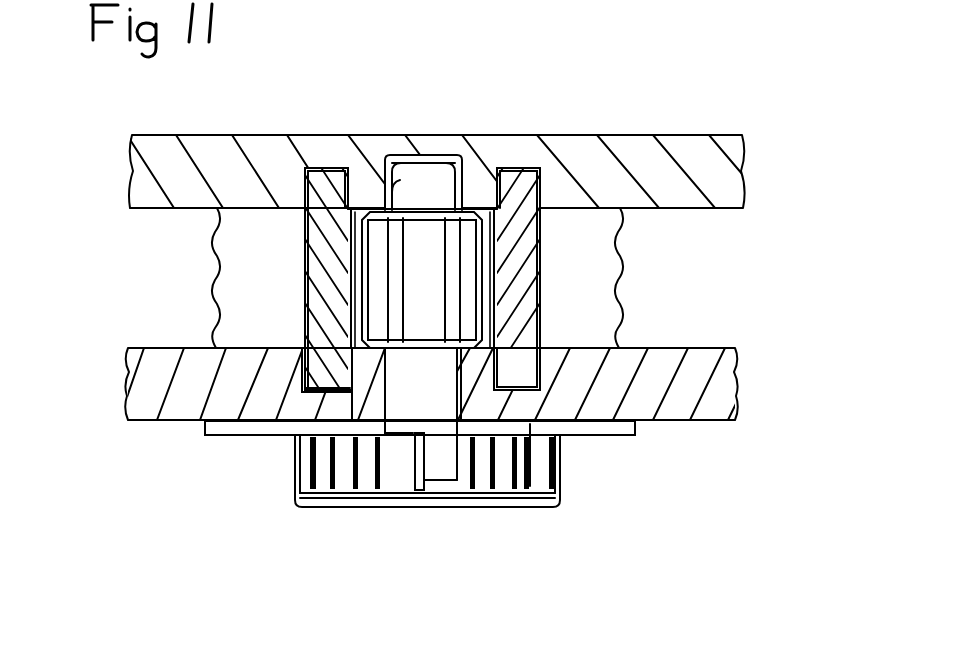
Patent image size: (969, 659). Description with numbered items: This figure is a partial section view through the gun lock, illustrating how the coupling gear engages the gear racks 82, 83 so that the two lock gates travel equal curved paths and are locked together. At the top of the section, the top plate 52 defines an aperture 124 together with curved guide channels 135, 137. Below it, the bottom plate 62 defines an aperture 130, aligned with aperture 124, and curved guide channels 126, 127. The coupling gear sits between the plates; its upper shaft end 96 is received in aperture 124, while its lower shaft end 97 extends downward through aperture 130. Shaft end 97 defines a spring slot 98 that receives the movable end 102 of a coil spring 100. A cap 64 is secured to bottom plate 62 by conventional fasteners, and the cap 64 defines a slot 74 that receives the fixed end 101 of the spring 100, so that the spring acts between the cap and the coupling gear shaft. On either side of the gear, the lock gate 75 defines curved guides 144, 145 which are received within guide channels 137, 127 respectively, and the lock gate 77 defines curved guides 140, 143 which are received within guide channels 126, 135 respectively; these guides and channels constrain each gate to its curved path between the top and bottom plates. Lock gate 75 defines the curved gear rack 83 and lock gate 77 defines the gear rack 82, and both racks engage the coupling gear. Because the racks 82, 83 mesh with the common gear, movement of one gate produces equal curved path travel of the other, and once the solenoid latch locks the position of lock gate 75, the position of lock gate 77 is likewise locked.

The top plate 52 is at (623, 153).
The bottom plate 62 is at (710, 378).
The lock gate 75 is at (240, 267).
The lock gate 77 is at (610, 287).
The curved guide 144 is at (327, 178).
The curved guide 143 is at (523, 183).
The curved guide channel 135 is at (503, 190).
The shaft end 96 is at (430, 183).
The aperture 124 is at (390, 185).
The gear rack 82 is at (497, 270).
The curved gear rack 83 is at (357, 260).
The curved guide channel 137 is at (313, 201).
The curved guide channel 126 is at (520, 387).
The curved guide 140 is at (528, 392).
The curved guide channel 127 is at (315, 380).
The curved guide 145 is at (308, 393).
The aperture 130 is at (315, 405).
The shaft end 97 is at (412, 421).
The spring slot 98 is at (428, 448).
The movable end 102 is at (437, 470).
The slot 74 is at (540, 475).
The cap 64 is at (507, 510).
The coil spring 100 is at (540, 492).
The fixed end 101 is at (560, 456).